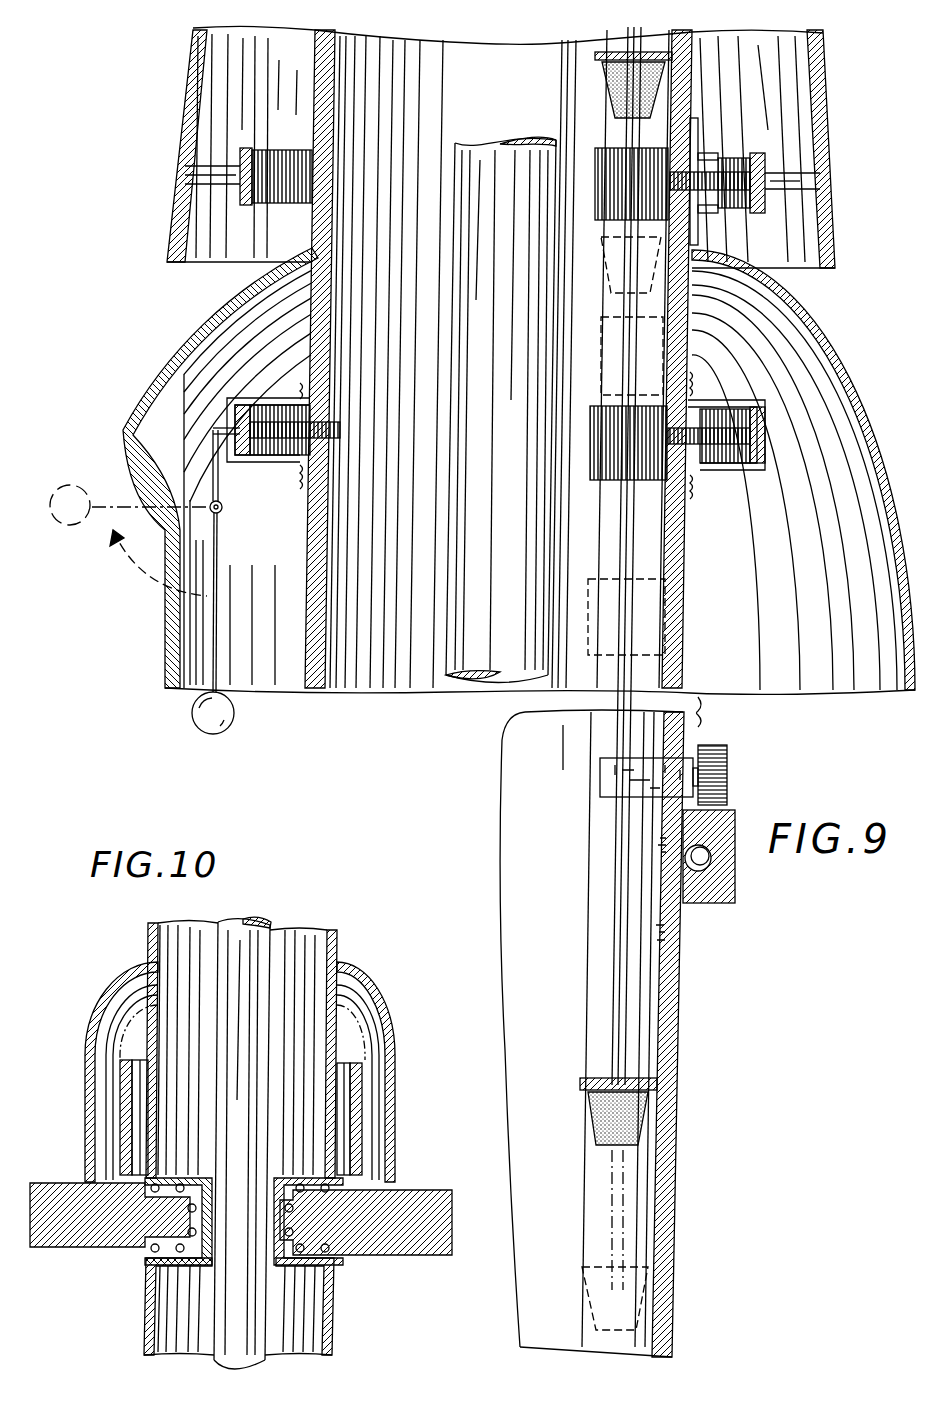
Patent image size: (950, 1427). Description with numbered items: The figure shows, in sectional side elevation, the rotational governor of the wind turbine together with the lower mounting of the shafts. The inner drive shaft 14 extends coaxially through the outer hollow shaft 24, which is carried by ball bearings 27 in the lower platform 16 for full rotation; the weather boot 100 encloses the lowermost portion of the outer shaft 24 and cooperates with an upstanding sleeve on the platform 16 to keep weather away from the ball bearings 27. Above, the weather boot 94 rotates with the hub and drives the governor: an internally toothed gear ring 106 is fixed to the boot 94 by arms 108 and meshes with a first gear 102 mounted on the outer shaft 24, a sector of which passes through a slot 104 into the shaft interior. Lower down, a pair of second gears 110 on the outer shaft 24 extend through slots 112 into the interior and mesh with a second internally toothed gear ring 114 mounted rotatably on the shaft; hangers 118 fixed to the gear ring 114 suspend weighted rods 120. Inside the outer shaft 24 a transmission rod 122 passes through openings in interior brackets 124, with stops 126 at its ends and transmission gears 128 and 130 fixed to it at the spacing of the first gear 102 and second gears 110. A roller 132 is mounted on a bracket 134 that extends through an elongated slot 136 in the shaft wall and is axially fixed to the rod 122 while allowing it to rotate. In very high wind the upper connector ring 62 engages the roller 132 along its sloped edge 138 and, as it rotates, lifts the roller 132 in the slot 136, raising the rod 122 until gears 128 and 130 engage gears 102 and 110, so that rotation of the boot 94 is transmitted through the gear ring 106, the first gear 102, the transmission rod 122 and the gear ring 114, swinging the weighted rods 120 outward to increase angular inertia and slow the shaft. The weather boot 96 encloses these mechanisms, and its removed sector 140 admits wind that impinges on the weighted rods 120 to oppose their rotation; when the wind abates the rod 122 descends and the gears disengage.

In FIG. 9, the inner drive shaft 14 is at (470, 156).
In FIG. 10, the inner drive shaft 14 is at (260, 943).
In FIG. 10, the lower platform 16 is at (433, 1202).
In FIG. 9, the outer hollow shaft 24 is at (312, 330).
In FIG. 10, the outer hollow shaft 24 is at (337, 949).
In FIG. 10, the ball bearings 27 is at (305, 1183).
In FIG. 9, the second connector ring 62 is at (740, 900).
In FIG. 9, the weather boot 94 is at (822, 98).
In FIG. 9, the weather boot 96 is at (845, 378).
In FIG. 10, the weather boot 100 is at (396, 1136).
In FIG. 9, the first gear 102 is at (730, 212).
In FIG. 10, the first gear 102 is at (362, 1077).
In FIG. 9, the slot 104 is at (698, 128).
In FIG. 9, the internally toothed gear ring 106 is at (727, 160).
In FIG. 9, the arms 108 is at (212, 168).
In FIG. 9, the second gears 110 is at (258, 462).
In FIG. 9, the slots 112 is at (306, 500).
In FIG. 9, the second internally toothed gear ring 114 is at (240, 403).
In FIG. 9, the hangers 118 is at (136, 501).
In FIG. 9, the weighted rods 120 is at (218, 560).
In FIG. 9, the transmission rod 122 is at (622, 1010).
In FIG. 9, the interior brackets 124 is at (595, 57).
In FIG. 9, the stops 126 is at (605, 90).
In FIG. 9, the transmission gear 128 is at (596, 150).
In FIG. 9, the transmission gear 130 is at (596, 482).
In FIG. 9, the roller 132 is at (728, 757).
In FIG. 9, the bracket 134 is at (613, 782).
In FIG. 9, the elongated slot 136 is at (670, 952).
In FIG. 9, the sloped edge 138 is at (730, 810).
In FIG. 9, the sector 140 is at (175, 623).